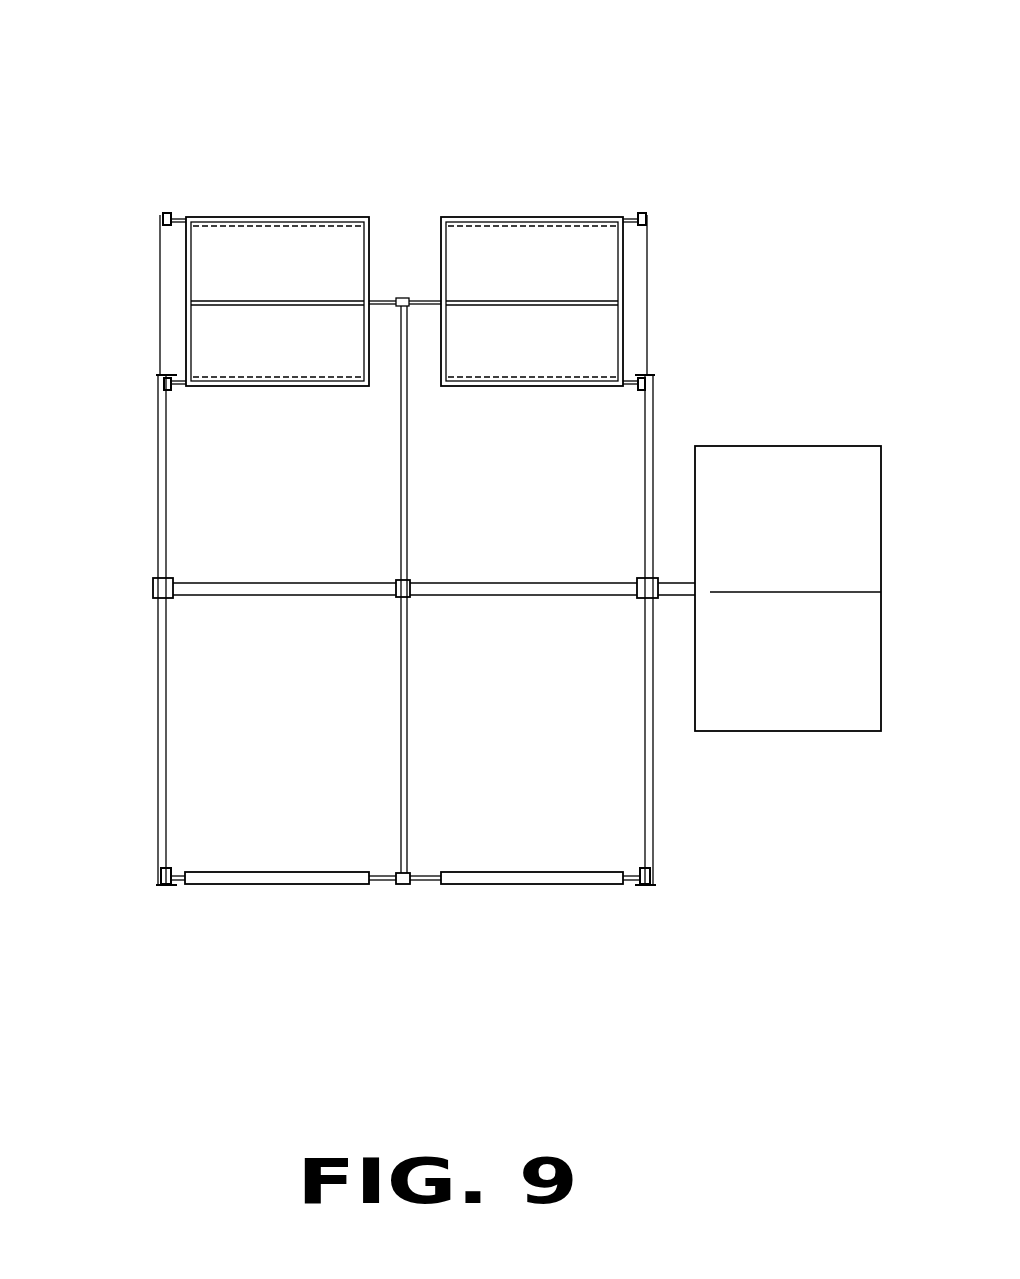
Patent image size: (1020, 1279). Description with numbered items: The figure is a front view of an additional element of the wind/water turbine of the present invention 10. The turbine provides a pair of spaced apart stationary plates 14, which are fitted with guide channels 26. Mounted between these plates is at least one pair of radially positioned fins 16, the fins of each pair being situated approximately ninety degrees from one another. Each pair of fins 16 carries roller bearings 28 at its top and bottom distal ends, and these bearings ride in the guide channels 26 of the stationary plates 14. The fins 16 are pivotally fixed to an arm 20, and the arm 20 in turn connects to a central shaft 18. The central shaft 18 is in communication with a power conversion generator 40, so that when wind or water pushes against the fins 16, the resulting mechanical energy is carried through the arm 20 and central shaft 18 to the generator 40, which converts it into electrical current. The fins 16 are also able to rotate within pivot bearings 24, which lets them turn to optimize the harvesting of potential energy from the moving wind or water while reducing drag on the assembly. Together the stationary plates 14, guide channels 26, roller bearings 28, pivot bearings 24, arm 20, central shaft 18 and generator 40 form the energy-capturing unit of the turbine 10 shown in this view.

The wind/water turbine 10 is at (728, 107).
The stationary plates 14 is at (157, 529).
The fins 16 is at (262, 215).
The central shaft 18 is at (565, 597).
The arm 20 is at (398, 511).
The pivot bearings 24 is at (418, 870).
The guide channels 26 is at (641, 373).
The roller bearings 28 is at (161, 872).
The power conversion generator 40 is at (805, 446).